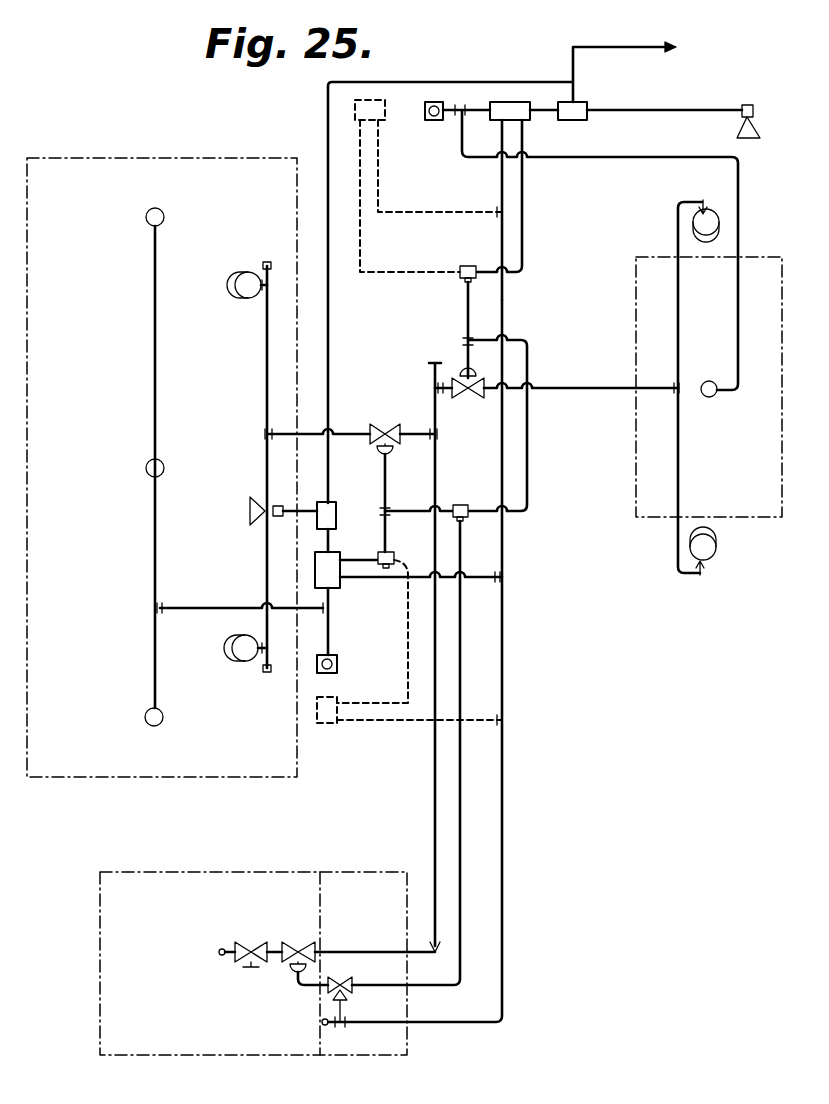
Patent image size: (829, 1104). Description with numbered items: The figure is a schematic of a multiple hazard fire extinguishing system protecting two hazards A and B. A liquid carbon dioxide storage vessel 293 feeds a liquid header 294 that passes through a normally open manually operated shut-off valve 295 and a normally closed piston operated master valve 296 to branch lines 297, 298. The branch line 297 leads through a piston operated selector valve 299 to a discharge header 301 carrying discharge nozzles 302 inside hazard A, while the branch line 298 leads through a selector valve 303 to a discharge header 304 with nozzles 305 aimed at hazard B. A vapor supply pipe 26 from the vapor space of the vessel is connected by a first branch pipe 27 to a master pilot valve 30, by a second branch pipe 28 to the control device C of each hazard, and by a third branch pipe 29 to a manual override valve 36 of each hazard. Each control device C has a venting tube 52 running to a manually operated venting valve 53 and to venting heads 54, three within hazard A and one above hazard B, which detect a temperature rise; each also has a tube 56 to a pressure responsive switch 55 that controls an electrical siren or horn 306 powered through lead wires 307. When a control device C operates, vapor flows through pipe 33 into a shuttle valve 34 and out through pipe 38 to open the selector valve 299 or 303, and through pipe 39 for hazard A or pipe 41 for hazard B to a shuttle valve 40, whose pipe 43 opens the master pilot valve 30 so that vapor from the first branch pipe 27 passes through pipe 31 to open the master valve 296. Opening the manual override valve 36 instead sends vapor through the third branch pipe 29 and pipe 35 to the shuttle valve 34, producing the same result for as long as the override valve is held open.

The vapor supply pipe 26 is at (503, 922).
The first branch pipe 27 is at (342, 1022).
The second branch pipe 28 is at (500, 183).
The third branch pipe 29 is at (380, 187).
The master pilot valve 30 is at (355, 991).
The pipe 31 is at (306, 988).
The pipe 33 is at (524, 210).
The shuttle valve 34 is at (471, 261).
The pipe 35 is at (388, 271).
The manual override valve 36 is at (385, 122).
The pipe 38 is at (466, 312).
The pipe 39 is at (401, 511).
The shuttle valve 40 is at (463, 500).
The pipe 41 is at (528, 468).
The pipe 43 is at (462, 778).
The venting tube 52 is at (460, 106).
The manually operated venting valve 53 is at (431, 121).
The venting head 54 is at (146, 217).
The pressure responsive switch 55 is at (590, 118).
The tube 56 is at (548, 118).
The liquid carbon dioxide storage vessel 293 is at (248, 872).
The liquid header 294 is at (415, 657).
The manually operated shut-off valve 295 is at (250, 946).
The master valve 296 is at (286, 960).
The branch line 297 is at (346, 434).
The branch line 298 is at (585, 387).
The selector valve 299 is at (393, 423).
The discharge header 301 is at (265, 388).
The discharge nozzle 302 is at (247, 300).
The selector valve 303 is at (474, 400).
The discharge header 304 is at (680, 462).
The nozzle 305 is at (720, 220).
The electrical siren or horn 306 is at (757, 130).
The lead wires 307 is at (575, 96).
The hazard A is at (160, 779).
The hazard B is at (636, 476).
The control device C is at (522, 130).